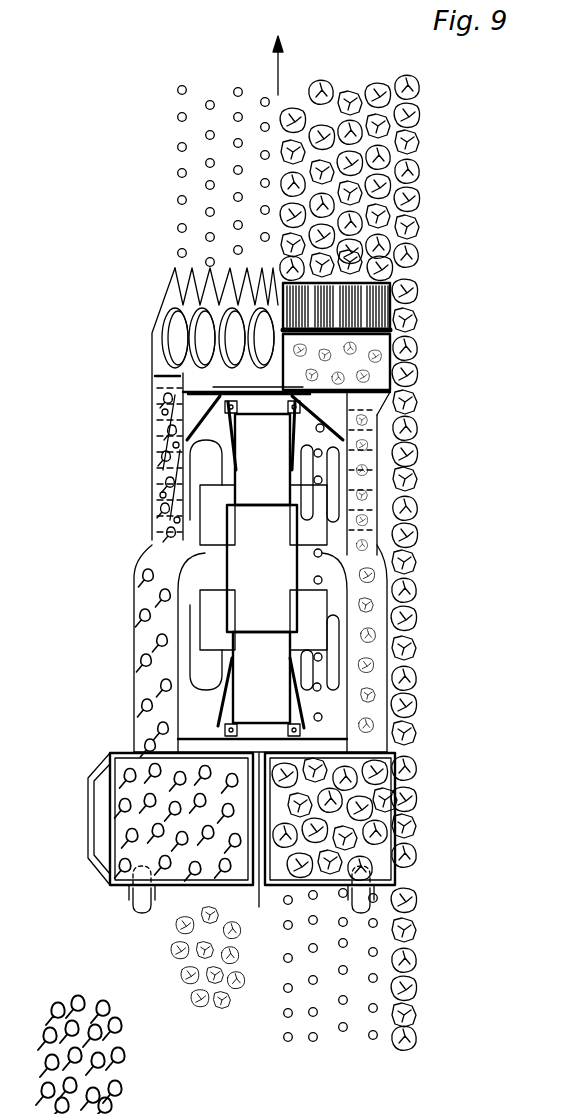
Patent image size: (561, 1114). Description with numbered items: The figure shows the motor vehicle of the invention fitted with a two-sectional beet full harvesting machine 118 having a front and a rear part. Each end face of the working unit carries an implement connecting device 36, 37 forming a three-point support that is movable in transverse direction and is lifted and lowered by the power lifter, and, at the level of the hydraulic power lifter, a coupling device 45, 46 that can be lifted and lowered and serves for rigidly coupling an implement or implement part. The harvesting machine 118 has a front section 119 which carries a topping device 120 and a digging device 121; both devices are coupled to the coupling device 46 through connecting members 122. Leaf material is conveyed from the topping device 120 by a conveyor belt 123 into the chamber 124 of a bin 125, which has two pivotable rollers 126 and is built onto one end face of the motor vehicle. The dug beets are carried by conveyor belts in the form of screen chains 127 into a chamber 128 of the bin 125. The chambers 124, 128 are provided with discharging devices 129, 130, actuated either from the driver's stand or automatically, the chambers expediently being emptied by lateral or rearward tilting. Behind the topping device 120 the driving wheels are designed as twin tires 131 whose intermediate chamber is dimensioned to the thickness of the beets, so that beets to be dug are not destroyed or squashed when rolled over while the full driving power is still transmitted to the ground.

The implement connecting device 36 is at (160, 451).
The implement connecting device 37 is at (223, 703).
The coupling device 45 is at (165, 431).
The coupling device 46 is at (222, 726).
The beet full harvesting machine 118 is at (432, 569).
The front section 119 is at (428, 412).
The topping device 120 is at (393, 300).
The digging device 121 is at (197, 310).
The connecting members 122 is at (225, 397).
The conveyor belt 123 is at (335, 468).
The chamber 124 is at (293, 800).
The bin 125 is at (257, 840).
The pivotable rollers 126 is at (133, 902).
The screen chains 127 is at (162, 496).
The chamber 128 is at (183, 803).
The discharging device 129 is at (225, 880).
The discharging device 130 is at (107, 830).
The twin tires 131 is at (305, 482).